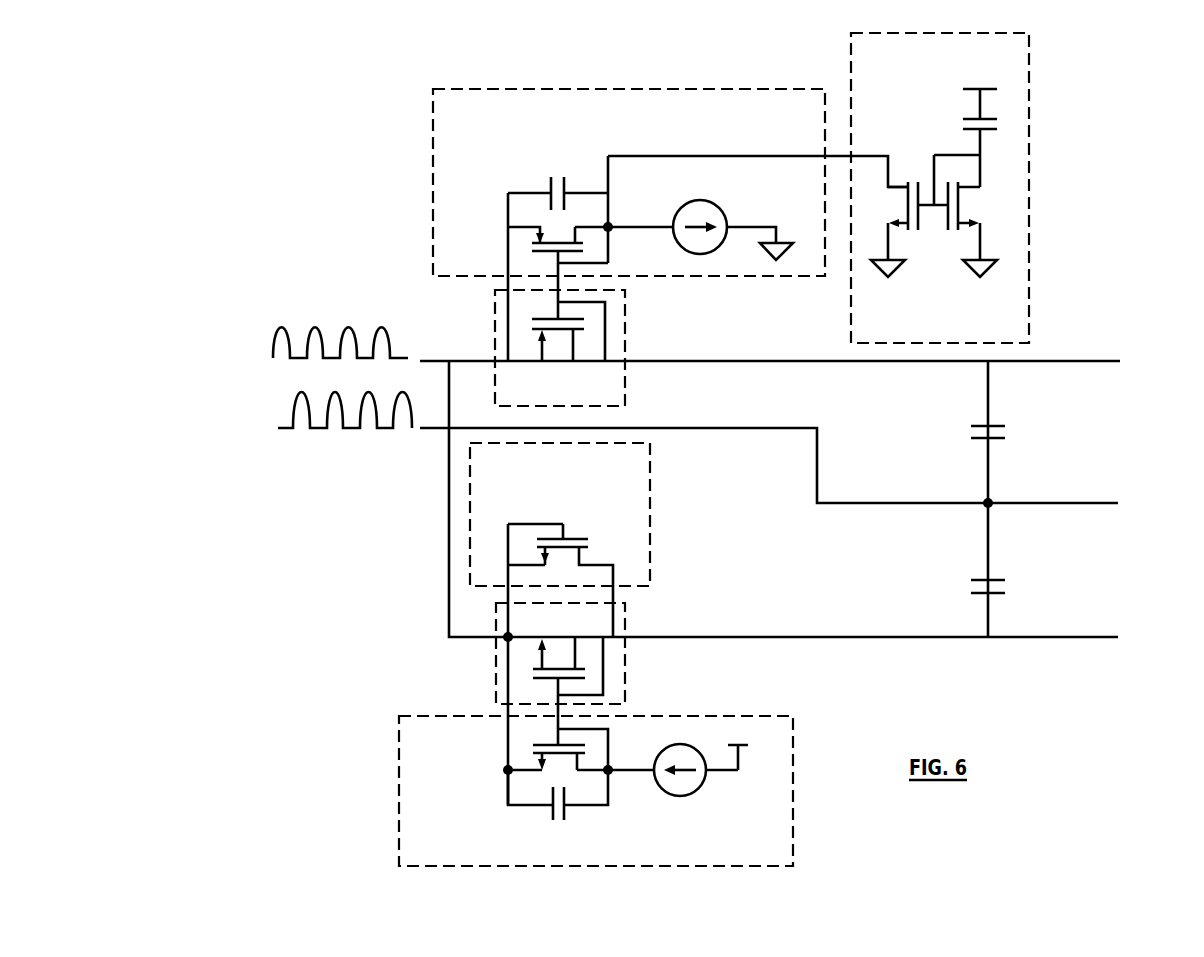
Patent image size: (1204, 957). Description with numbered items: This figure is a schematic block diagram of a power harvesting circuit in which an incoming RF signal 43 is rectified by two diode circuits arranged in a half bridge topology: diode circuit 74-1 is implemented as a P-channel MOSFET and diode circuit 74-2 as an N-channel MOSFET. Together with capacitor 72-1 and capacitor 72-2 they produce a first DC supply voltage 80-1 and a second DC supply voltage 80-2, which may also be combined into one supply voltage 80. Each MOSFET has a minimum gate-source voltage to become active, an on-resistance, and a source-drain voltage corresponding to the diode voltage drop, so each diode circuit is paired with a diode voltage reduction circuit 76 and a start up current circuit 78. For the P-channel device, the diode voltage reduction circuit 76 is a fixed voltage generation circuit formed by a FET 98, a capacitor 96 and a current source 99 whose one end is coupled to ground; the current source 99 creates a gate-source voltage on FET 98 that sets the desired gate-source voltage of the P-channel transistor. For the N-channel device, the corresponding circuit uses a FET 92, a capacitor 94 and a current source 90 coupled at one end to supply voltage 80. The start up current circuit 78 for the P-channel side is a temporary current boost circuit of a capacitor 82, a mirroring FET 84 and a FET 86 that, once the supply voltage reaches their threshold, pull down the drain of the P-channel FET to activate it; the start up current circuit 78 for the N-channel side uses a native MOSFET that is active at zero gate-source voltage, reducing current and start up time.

The RF signal 43 is at (287, 393).
The diode voltage reduction circuit 76 is at (594, 146).
The capacitor 96 is at (535, 181).
The FET 98 is at (568, 236).
The current source 99 is at (743, 205).
The start up current circuit 78 is at (977, 331).
The supply voltage 80 is at (988, 81).
The capacitor 82 is at (944, 133).
The FET 86 is at (889, 216).
The mirroring FET 84 is at (990, 216).
The diode circuit 74-1 is at (560, 348).
The diode circuit 74-2 is at (560, 659).
The capacitor 72-1 is at (1055, 441).
The capacitor 72-2 is at (1055, 596).
The first DC supply voltage 80-1 is at (1191, 456).
The second DC supply voltage 80-2 is at (1191, 596).
The FET 92 is at (568, 776).
The capacitor 94 is at (606, 830).
The current source 90 is at (732, 803).